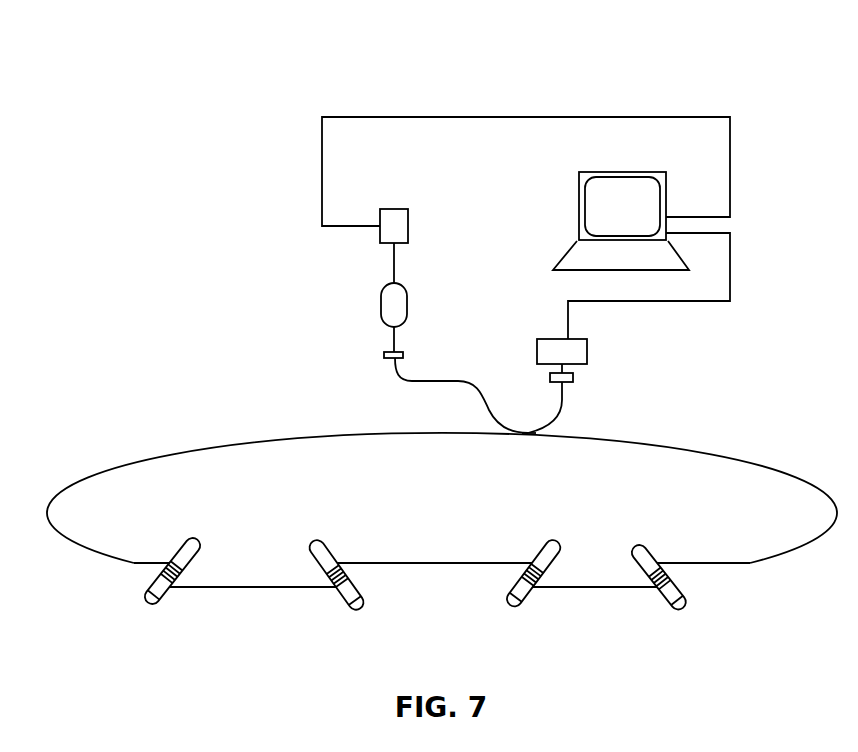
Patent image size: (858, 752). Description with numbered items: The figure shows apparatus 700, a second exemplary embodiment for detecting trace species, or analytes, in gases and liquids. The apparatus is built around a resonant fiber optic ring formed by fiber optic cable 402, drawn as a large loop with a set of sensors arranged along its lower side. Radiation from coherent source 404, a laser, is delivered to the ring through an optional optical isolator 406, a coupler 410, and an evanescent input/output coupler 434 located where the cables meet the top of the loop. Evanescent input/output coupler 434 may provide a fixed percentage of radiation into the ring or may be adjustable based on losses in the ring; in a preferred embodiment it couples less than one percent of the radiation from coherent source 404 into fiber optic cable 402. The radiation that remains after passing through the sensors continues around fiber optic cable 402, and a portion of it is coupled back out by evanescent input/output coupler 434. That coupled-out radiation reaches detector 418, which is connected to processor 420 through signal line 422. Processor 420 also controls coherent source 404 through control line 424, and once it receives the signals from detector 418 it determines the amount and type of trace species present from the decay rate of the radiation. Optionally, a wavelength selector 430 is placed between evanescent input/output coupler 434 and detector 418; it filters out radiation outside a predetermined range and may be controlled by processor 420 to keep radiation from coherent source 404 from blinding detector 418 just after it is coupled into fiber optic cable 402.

The apparatus 700 is at (373, 45).
The fiber optic cable 402 is at (785, 473).
The coherent source 404 is at (403, 226).
The optical isolator 406 is at (398, 305).
The coupler 410 is at (403, 355).
The detector 418 is at (580, 354).
The processor 420 is at (600, 187).
The signal line 422 is at (687, 302).
The control line 424 is at (322, 178).
The wavelength selector 430 is at (575, 378).
The evanescent input/output coupler 434 is at (540, 432).